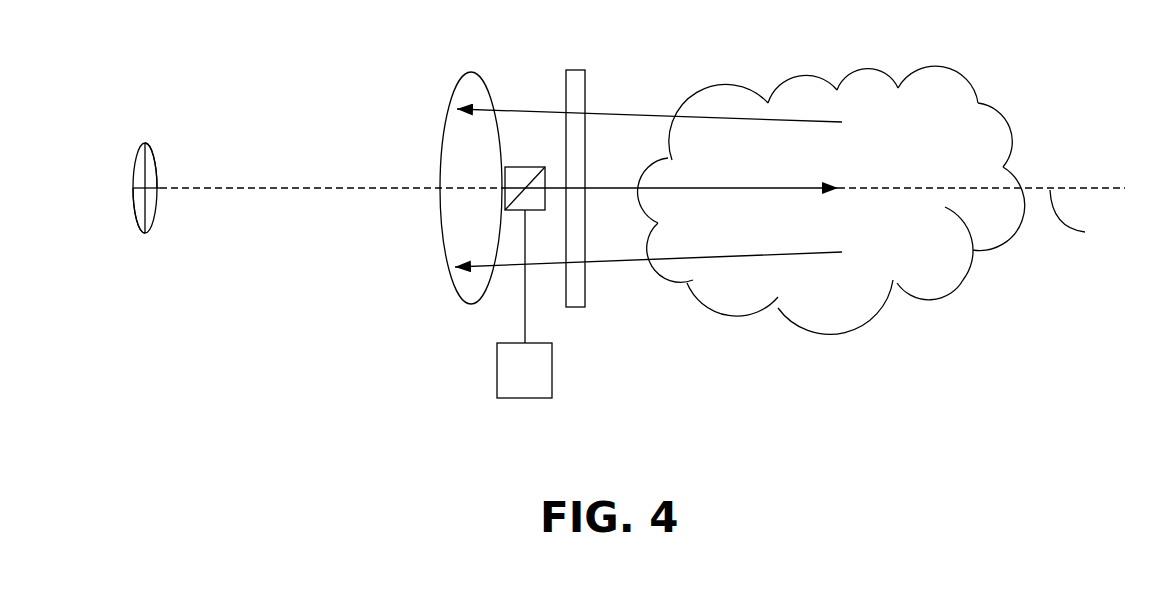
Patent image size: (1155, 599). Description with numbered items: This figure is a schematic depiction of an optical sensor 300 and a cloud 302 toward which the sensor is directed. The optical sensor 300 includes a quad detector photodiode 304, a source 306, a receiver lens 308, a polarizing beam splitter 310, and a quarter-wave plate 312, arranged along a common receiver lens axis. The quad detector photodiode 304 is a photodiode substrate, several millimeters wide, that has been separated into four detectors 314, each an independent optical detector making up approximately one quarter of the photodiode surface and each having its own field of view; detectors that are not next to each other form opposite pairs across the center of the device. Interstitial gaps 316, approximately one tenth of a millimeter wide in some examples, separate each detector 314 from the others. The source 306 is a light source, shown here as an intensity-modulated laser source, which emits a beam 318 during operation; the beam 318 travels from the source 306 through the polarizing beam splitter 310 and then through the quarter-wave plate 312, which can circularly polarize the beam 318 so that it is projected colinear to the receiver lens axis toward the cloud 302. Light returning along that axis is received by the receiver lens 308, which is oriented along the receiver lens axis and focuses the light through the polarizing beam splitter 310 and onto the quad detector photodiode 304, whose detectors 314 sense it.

The optical sensor 300 is at (601, 256).
The cloud 302 is at (940, 268).
The quad detector photodiode 304 is at (132, 180).
The source 306 is at (497, 385).
The receiver lens 308 is at (448, 283).
The polarizing beam splitter 310 is at (519, 165).
The quarter-wave plate 312 is at (573, 307).
The detectors 314 is at (138, 205).
The interstitial gaps 316 is at (145, 146).
The beam 318 is at (659, 157).